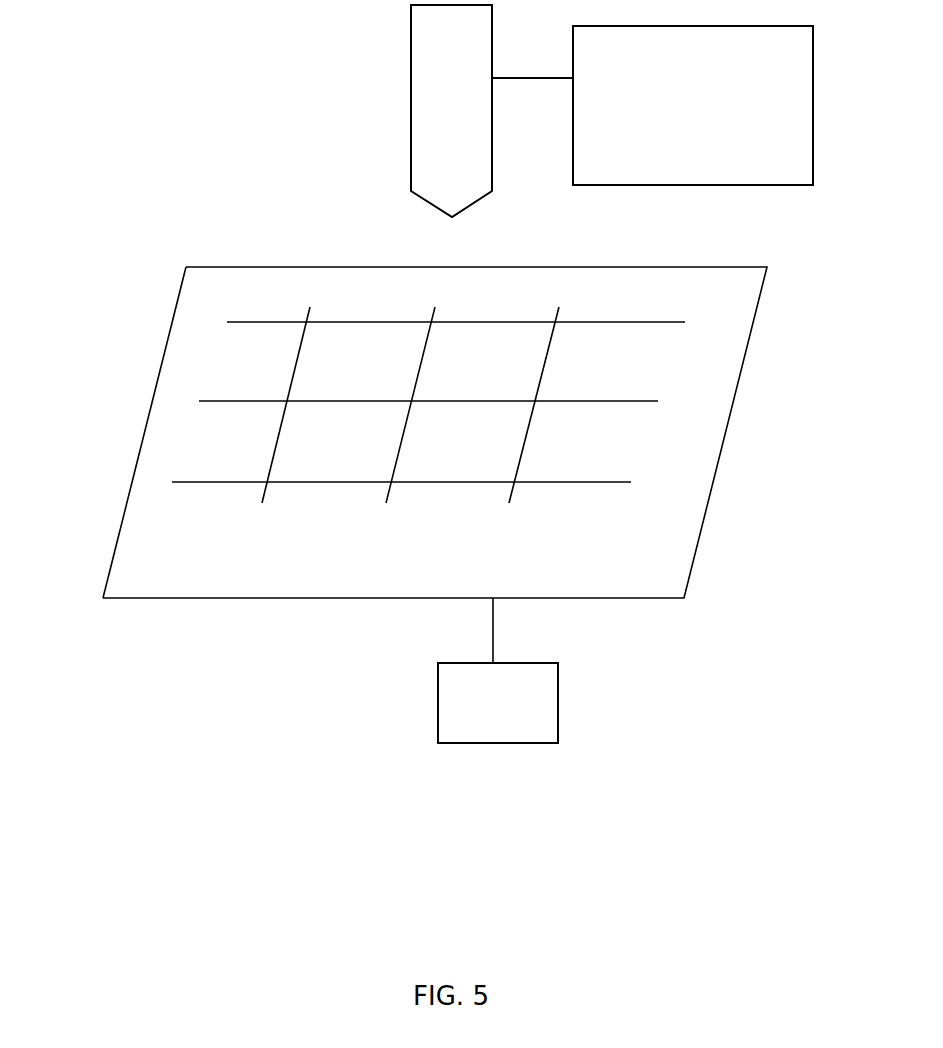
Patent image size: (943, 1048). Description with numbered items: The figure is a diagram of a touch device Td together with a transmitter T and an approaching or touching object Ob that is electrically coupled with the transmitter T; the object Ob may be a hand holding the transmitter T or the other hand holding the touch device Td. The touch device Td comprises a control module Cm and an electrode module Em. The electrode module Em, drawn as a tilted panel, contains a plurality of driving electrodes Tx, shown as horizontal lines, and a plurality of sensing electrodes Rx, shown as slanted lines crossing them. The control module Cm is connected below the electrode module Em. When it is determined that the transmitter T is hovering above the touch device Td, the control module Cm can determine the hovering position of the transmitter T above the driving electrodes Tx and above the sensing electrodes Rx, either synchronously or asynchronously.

The transmitter T is at (451, 111).
The approaching or touching object Ob is at (652, 105).
The touch device Td is at (637, 531).
The electrode module Em is at (140, 491).
The driving electrodes Tx is at (415, 409).
The sensing electrodes Rx is at (103, 632).
The control module Cm is at (498, 670).